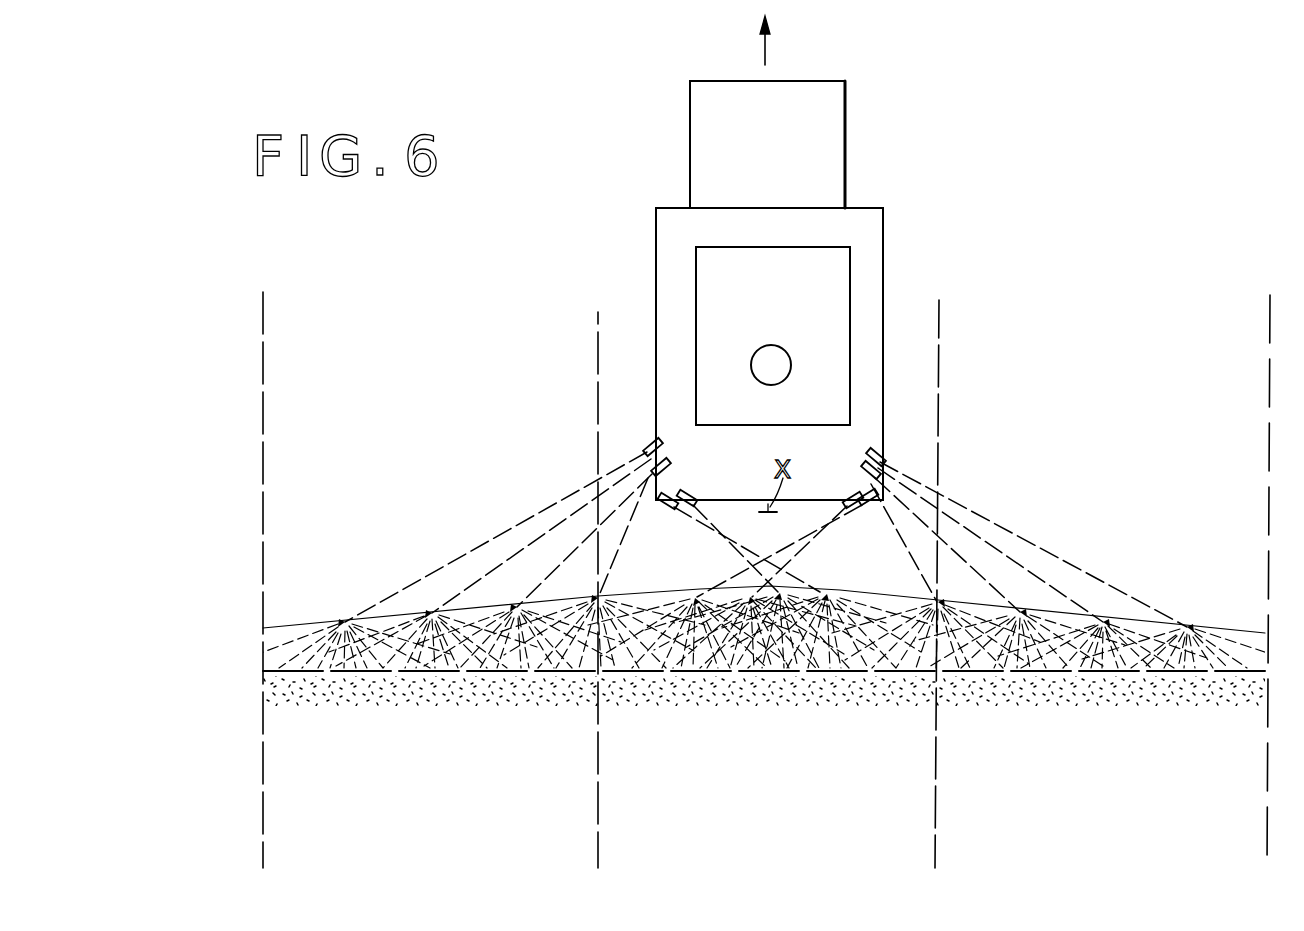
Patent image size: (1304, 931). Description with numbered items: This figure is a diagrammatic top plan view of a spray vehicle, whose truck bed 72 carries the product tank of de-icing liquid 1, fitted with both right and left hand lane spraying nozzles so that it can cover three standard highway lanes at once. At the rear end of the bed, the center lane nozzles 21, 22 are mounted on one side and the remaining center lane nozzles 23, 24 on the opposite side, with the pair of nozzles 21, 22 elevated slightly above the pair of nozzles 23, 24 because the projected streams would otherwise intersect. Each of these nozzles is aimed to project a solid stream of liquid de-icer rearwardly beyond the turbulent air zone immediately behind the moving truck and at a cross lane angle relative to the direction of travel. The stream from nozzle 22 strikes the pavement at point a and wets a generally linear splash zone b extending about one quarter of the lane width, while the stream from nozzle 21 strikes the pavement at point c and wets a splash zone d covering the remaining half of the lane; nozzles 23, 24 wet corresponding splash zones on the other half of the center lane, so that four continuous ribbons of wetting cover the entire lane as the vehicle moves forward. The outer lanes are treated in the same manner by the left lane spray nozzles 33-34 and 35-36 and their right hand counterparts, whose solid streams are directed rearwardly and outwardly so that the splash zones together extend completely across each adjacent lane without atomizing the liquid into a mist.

The product tank of de-icing liquid 1 is at (867, 258).
The truck bed 72 is at (868, 336).
The left lane spray nozzles 33-34 is at (648, 450).
The left lane spray nozzles 35-36 is at (664, 470).
The center lane nozzle 21 is at (668, 493).
The center lane nozzle 22 is at (690, 497).
The center lane nozzle 23 is at (868, 478).
The center lane nozzle 24 is at (852, 492).
The point a is at (827, 577).
The splash zone b is at (853, 596).
The point c is at (784, 591).
The splash zone d is at (812, 613).